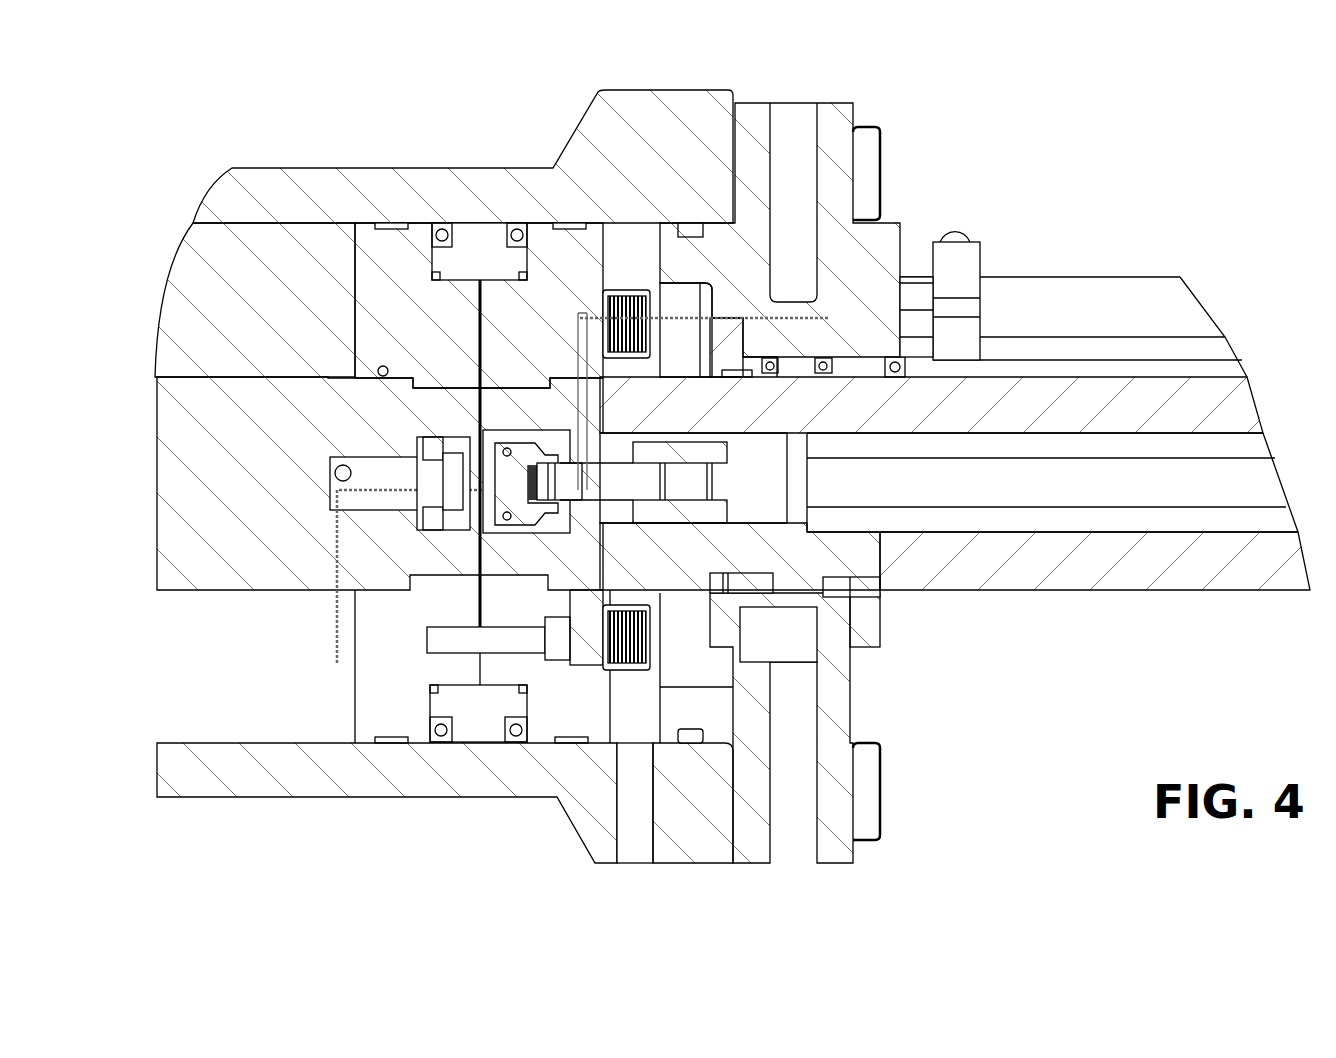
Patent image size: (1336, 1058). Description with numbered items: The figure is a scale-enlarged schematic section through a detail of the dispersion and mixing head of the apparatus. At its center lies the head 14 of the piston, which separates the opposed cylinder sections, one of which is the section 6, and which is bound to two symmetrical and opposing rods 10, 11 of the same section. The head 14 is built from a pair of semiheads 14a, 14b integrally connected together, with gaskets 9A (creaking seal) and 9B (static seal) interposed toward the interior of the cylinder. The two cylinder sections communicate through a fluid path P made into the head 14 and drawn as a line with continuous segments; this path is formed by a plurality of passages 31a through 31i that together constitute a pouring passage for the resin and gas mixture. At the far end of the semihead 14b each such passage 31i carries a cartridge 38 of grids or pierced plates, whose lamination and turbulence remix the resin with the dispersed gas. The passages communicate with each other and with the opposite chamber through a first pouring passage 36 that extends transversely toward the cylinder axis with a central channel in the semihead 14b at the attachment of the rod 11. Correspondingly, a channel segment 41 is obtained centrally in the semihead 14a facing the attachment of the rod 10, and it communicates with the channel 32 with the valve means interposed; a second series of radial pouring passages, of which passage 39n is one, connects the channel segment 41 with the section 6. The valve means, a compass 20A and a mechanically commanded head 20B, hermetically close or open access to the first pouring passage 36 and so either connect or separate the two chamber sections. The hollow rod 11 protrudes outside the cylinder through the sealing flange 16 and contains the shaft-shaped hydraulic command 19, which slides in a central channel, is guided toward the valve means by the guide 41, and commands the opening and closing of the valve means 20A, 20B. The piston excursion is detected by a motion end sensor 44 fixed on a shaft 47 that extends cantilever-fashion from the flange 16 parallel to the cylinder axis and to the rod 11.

The section of the dispersion and mixing cylinder 6 is at (265, 292).
The head 14 is at (357, 212).
The semihead 14a is at (393, 268).
The semihead 14b is at (572, 255).
The gasket with creaking seal 9A is at (513, 250).
The gasket with static seal 9B is at (430, 745).
The passage 31a is at (582, 312).
The passage 31i is at (580, 640).
The cartridge 38 is at (632, 287).
The fluid path P is at (709, 291).
The first pouring passage 36 is at (593, 390).
The channel segment 41 is at (383, 458).
The further pouring passage 39n is at (332, 545).
The rod 10 is at (205, 550).
The compass 20A is at (443, 517).
The mechanically commanded head 20B is at (535, 515).
The channel 32 is at (823, 522).
The shaft shaped hydraulic command 19 is at (1128, 478).
The rod 11 is at (1150, 550).
The shaft 47 is at (1083, 308).
The motion end sensor 44 is at (938, 258).
The sealing flange 16 is at (748, 750).